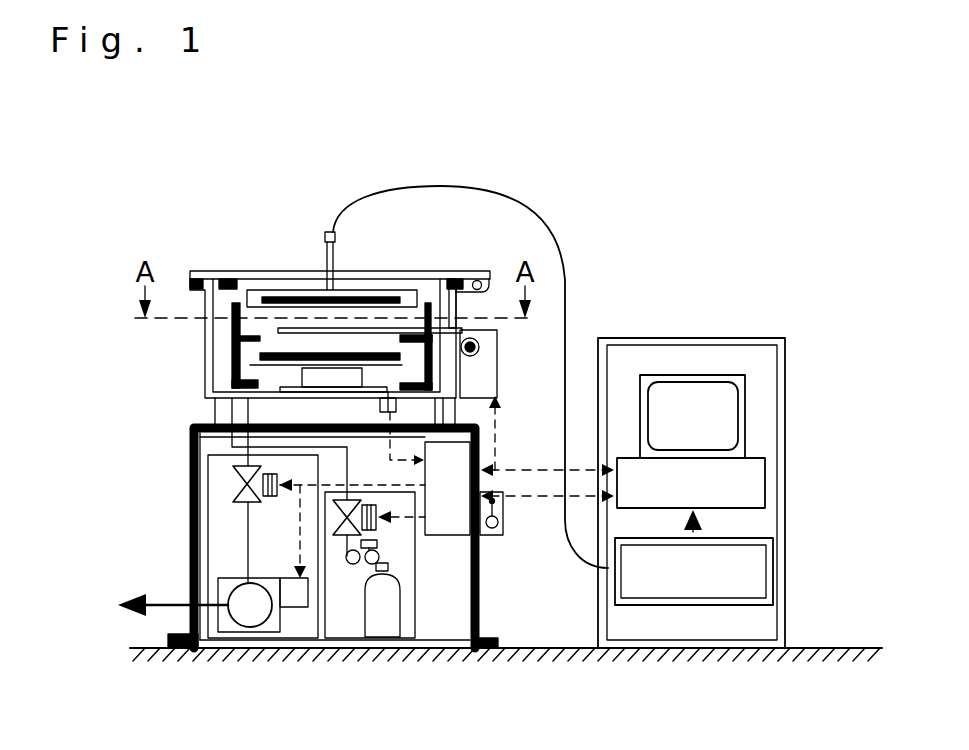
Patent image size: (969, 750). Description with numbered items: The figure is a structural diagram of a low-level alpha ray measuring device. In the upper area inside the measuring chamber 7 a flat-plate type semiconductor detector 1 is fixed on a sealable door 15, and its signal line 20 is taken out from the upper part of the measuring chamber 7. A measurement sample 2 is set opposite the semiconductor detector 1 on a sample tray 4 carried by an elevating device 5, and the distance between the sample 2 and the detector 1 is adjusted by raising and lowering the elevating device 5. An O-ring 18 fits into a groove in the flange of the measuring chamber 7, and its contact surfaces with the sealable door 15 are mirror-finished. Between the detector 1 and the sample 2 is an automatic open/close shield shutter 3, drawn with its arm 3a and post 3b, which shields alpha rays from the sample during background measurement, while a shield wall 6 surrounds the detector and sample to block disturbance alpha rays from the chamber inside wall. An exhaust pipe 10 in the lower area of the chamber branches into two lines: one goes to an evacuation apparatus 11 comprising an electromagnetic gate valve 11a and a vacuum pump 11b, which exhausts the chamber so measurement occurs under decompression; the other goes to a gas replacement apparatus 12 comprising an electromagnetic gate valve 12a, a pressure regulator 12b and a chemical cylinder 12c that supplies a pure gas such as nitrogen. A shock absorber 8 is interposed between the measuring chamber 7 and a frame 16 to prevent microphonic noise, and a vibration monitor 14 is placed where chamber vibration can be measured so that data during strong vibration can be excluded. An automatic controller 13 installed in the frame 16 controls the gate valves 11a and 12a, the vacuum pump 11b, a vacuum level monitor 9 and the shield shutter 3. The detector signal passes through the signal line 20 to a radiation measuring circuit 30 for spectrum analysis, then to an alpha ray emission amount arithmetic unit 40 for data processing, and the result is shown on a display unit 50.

The semiconductor detector 1 is at (335, 295).
The measurement sample 2 is at (310, 350).
The shield shutter 3 is at (482, 354).
The transport arm 3a is at (368, 328).
The support post 3b is at (488, 306).
The sample tray 4 is at (262, 354).
The elevating device 5 is at (330, 380).
The shield wall 6 is at (238, 340).
The measuring chamber 7 is at (205, 305).
The shock absorber 8 is at (215, 412).
The vacuum level monitor 9 is at (400, 405).
The exhaust pipe 10 is at (192, 440).
The evacuation apparatus 11 is at (232, 487).
The electromagnetic gate valve 11a is at (237, 495).
The vacuum pump 11b is at (243, 605).
The gas replacement apparatus 12 is at (318, 648).
The electromagnetic gate valve 12a is at (345, 535).
The pressure regulator 12b is at (382, 617).
The chemical cylinder 12c is at (382, 562).
The automatic controller 13 is at (440, 520).
The vibration monitor 14 is at (503, 515).
The sealable door 15 is at (230, 271).
The frame 16 is at (480, 612).
The O-ring 18 is at (208, 280).
The signal line 20 is at (352, 215).
The radiation measuring circuit 30 is at (750, 572).
The alpha ray emission amount arithmetic unit 40 is at (747, 473).
The display unit 50 is at (715, 410).